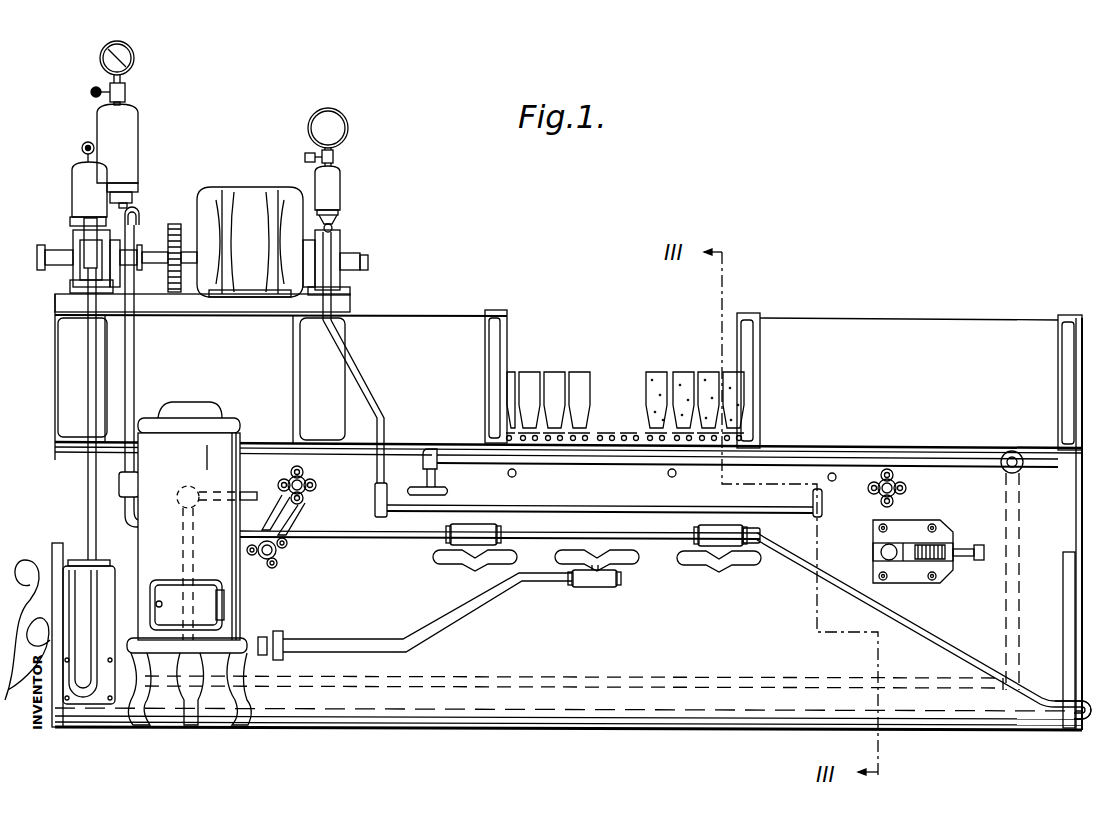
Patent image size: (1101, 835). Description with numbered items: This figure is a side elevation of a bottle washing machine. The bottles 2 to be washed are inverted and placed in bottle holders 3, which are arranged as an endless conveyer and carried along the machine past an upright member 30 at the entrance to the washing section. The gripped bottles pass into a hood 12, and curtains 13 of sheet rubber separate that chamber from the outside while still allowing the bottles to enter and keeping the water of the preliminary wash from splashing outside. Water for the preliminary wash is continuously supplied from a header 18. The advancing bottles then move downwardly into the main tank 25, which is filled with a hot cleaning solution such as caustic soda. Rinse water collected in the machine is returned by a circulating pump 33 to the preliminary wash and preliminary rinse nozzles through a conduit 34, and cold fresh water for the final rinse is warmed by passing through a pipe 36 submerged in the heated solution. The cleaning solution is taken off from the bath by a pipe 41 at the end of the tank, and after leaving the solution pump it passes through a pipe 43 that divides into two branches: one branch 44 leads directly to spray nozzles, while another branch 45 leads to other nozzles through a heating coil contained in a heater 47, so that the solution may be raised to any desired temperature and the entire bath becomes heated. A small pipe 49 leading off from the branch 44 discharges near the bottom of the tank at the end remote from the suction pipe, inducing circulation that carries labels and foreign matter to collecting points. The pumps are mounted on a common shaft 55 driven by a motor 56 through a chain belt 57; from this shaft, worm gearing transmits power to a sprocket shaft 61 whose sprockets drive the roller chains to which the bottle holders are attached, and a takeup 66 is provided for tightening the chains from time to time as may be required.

The bottles 2 is at (708, 374).
The bottle holders 3 is at (628, 432).
The hood 12 is at (909, 357).
The curtains 13 is at (746, 352).
The header 18 is at (812, 497).
The main tank 25 is at (632, 646).
The feed trough post 30 is at (506, 348).
The circulating pump 33 is at (338, 255).
The conduit 34 is at (372, 398).
The pipe 36 is at (790, 455).
The pipe 41 is at (90, 348).
The pipe 43 is at (134, 350).
The branch 44 is at (378, 538).
The branch 45 is at (460, 612).
The heater 47 is at (192, 563).
The small pipe 49 is at (1060, 705).
The common shaft 55 is at (152, 256).
The motor 56 is at (250, 242).
The chain belt 57 is at (175, 228).
The sprocket shaft 61 is at (280, 548).
The takeup 66 is at (897, 546).